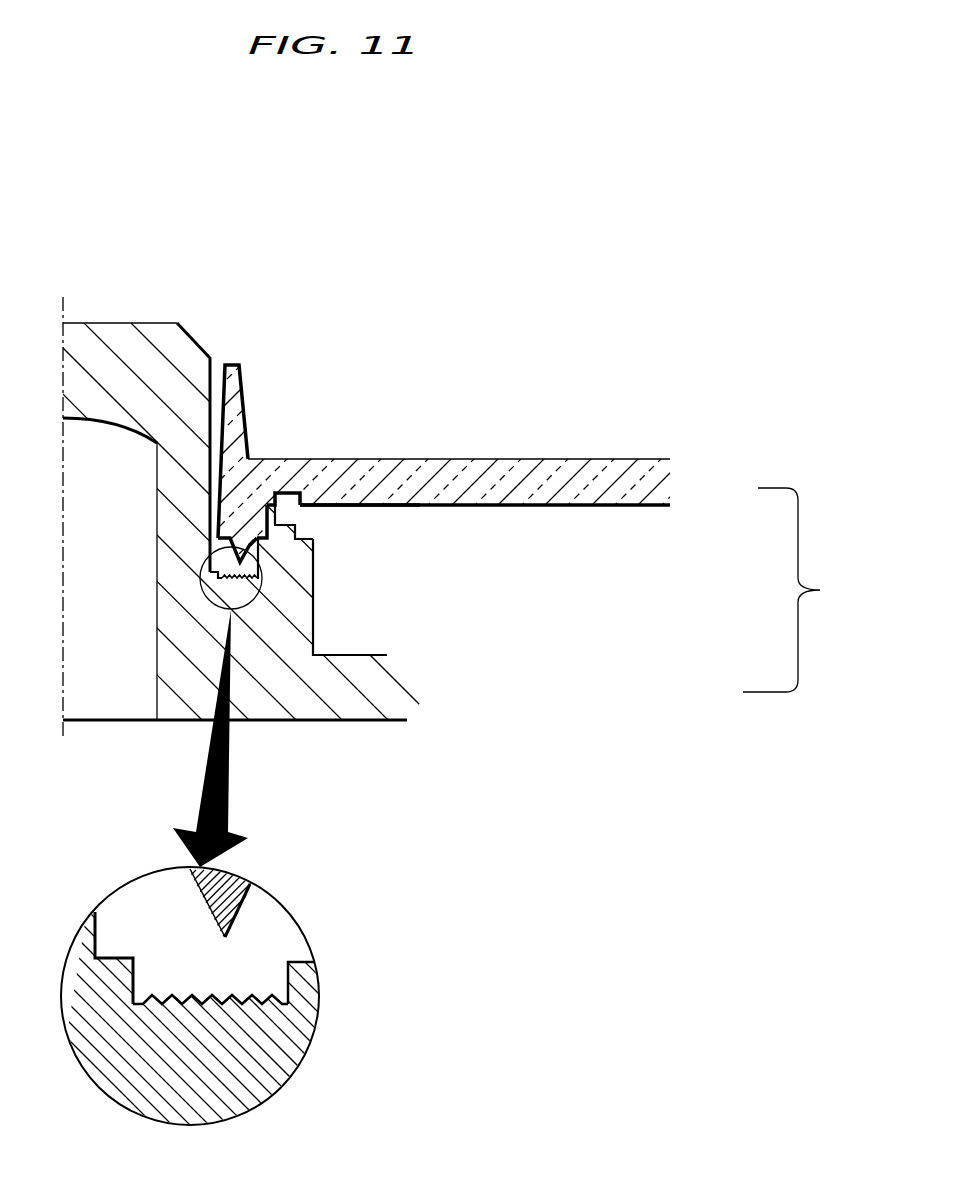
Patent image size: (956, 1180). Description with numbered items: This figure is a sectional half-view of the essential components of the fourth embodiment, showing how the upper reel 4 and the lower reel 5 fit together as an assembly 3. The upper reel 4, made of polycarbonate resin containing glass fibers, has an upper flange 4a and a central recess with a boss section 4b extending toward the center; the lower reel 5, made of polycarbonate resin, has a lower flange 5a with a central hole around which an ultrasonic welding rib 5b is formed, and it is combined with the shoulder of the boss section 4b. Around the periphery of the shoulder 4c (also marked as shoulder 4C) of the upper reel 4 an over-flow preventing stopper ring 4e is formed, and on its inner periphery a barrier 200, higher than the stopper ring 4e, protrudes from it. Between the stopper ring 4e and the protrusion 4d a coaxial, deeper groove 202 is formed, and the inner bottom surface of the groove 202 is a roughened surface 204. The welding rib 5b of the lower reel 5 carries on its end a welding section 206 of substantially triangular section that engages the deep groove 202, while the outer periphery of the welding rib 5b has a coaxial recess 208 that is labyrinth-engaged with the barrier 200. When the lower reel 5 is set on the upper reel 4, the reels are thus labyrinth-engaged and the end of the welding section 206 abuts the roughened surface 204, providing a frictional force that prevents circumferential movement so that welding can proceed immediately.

The sealing structure 3 is at (798, 590).
The upper reel 4 is at (380, 529).
The upper flange 4a is at (265, 745).
The boss section 4b is at (315, 618).
The shoulder 4c is at (115, 958).
The shoulder 4C is at (214, 514).
The protrusion 4d is at (125, 350).
The over-flow preventing stopper ring 4e is at (315, 550).
The lower reel 5 is at (487, 442).
The lower flange 5a is at (568, 468).
The ultrasonic welding rib 5b is at (243, 423).
The barrier 200 is at (305, 493).
The groove 202 is at (226, 617).
The roughened surface 204 is at (188, 1008).
The welding section 206 is at (232, 608).
The recess 208 is at (295, 460).